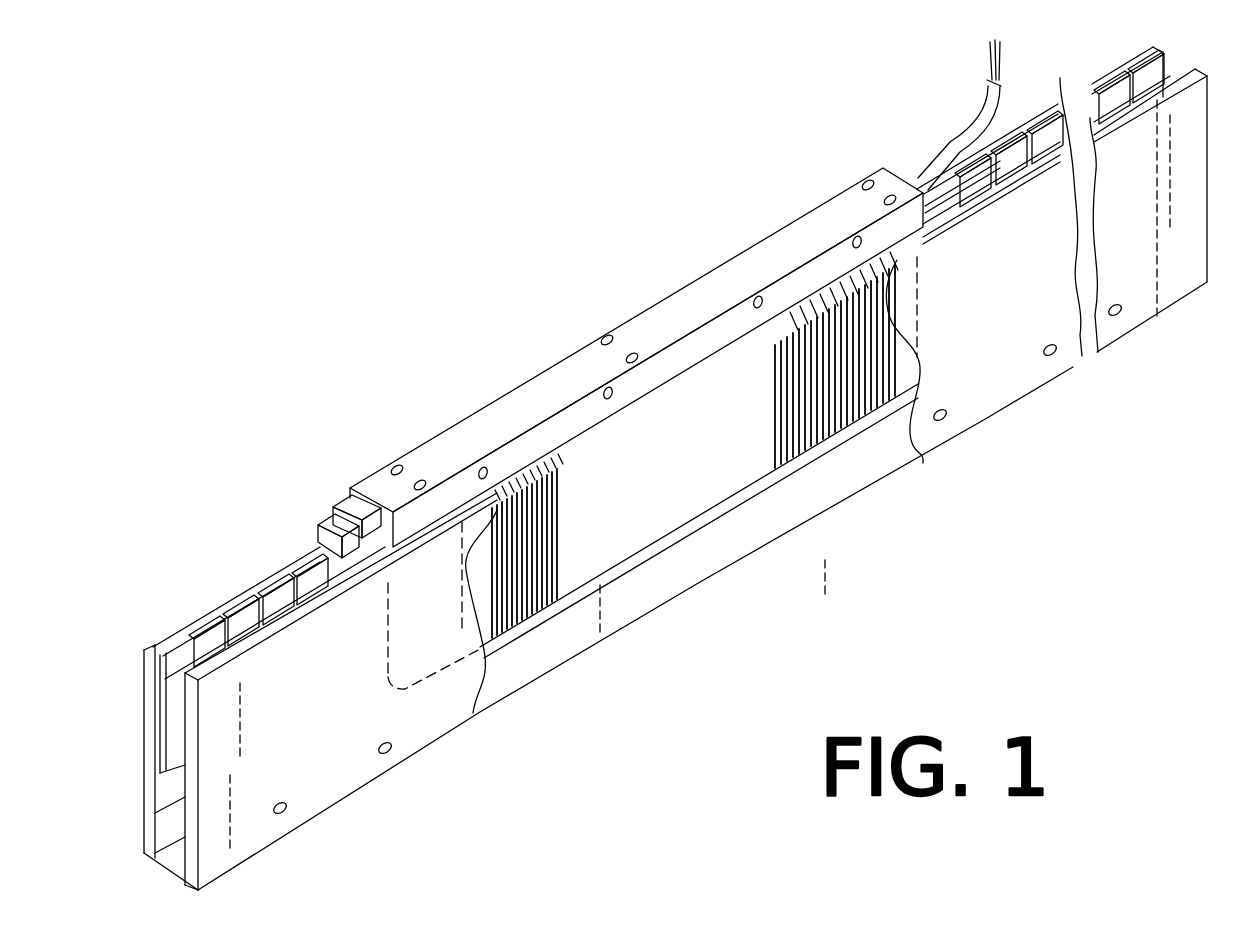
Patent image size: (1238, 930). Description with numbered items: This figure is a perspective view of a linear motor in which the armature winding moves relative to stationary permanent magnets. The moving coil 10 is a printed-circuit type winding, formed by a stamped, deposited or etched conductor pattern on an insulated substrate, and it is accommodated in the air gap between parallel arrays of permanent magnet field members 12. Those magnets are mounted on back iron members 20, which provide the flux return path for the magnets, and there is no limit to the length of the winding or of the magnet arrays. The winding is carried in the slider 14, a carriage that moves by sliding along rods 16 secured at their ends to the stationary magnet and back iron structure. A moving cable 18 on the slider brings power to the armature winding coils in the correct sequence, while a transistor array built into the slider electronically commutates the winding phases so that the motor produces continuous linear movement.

The moving coil 10 is at (850, 398).
The permanent magnet field members 12 is at (1012, 130).
The slider 14 is at (459, 441).
The rods 16 is at (964, 188).
The moving cable 18 is at (983, 93).
The back iron members 20 is at (165, 643).